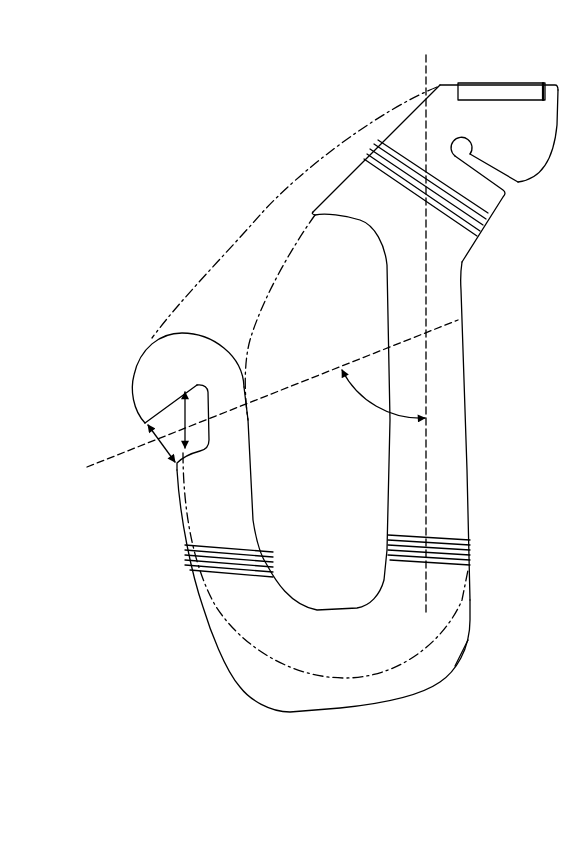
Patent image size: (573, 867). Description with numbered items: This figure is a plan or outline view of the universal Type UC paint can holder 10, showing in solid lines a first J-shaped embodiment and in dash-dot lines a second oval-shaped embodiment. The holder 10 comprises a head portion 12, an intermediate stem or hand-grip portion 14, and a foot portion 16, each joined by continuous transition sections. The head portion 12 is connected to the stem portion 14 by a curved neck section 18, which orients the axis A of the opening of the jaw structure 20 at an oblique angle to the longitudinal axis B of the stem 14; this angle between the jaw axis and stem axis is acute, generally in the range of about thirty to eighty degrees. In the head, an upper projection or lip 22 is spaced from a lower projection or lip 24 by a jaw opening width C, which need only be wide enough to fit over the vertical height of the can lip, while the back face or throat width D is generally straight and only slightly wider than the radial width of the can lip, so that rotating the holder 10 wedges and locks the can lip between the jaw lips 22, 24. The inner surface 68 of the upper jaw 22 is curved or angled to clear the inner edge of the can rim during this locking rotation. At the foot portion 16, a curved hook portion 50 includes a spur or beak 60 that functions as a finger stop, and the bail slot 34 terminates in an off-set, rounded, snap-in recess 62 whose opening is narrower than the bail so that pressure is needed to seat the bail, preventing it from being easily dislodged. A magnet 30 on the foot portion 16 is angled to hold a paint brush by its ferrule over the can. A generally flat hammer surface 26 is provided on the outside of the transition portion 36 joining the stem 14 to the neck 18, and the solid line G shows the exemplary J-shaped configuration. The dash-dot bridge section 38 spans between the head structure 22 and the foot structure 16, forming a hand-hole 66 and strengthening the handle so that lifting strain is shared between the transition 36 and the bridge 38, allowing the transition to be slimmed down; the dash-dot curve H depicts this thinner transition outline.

The paint can holder 10 is at (285, 92).
The head portion 12 is at (241, 361).
The stem portion 14 is at (468, 443).
The foot portion 16 is at (318, 177).
The neck section 18 is at (241, 608).
The jaw structure 20 is at (141, 433).
The upper projection 22 is at (152, 355).
The lower projection 24 is at (177, 465).
The hammer surface 26 is at (283, 713).
The magnet 30 is at (512, 88).
The bail slot 34 is at (511, 192).
The transition section 36 is at (358, 652).
The bridge section 38 is at (253, 284).
The curved hook portion 50 is at (458, 249).
The spur 60 is at (378, 200).
The rounded recess 62 is at (476, 136).
The hand-hole 66 is at (339, 532).
The inner surface of upper jaw 68 is at (173, 401).
The axis of jaw opening A is at (127, 453).
The longitudinal axis of stem B is at (427, 372).
The jaw opening width C is at (163, 447).
The throat width D is at (208, 448).
The solid line configuration G is at (463, 653).
The inner dash-dot curve H is at (410, 660).